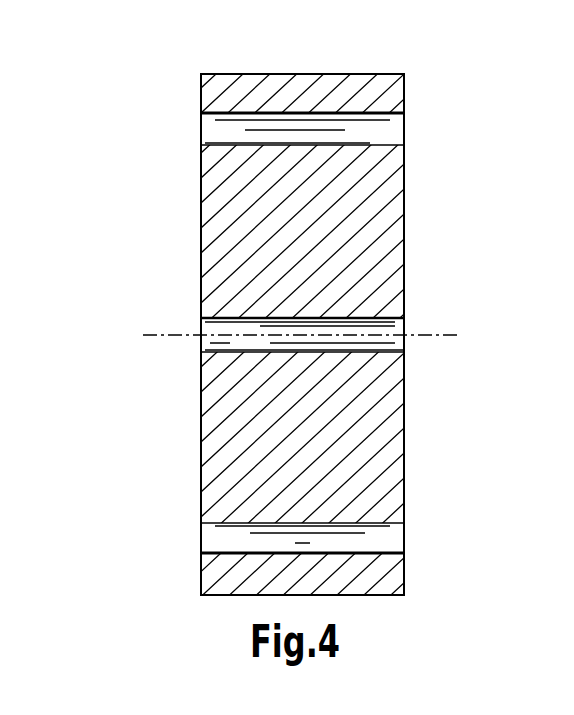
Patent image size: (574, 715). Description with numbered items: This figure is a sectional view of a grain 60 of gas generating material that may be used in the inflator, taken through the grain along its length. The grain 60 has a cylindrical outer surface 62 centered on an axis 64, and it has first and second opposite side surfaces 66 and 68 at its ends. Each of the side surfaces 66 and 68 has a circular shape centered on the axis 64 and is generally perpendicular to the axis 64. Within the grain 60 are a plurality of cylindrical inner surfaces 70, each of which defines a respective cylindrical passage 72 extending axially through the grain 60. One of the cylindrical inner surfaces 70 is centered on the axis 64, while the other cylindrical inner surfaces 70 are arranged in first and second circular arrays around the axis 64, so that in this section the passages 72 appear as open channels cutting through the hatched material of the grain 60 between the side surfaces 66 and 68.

The grain 60 is at (66, 106).
The cylindrical outer surface 62 is at (300, 73).
The axis 64 is at (148, 334).
The first side surface 66 is at (200, 86).
The second side surface 68 is at (405, 97).
The cylindrical inner surface 70 is at (200, 143).
The cylindrical passage 72 is at (200, 127).